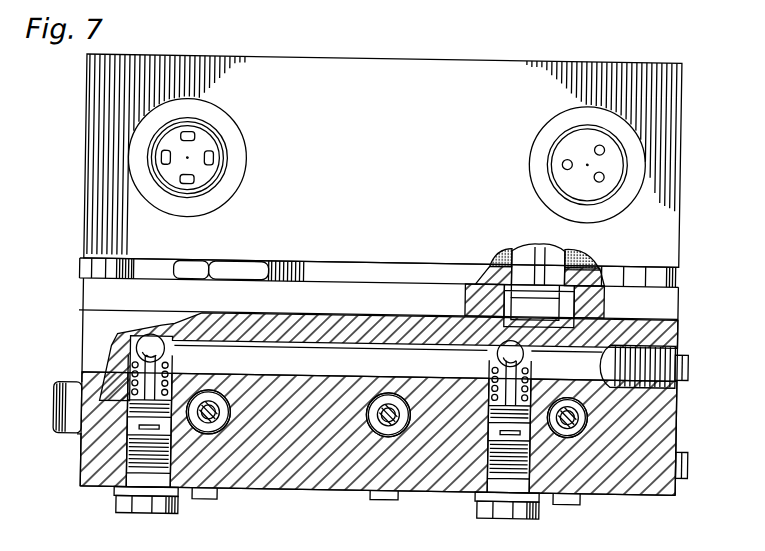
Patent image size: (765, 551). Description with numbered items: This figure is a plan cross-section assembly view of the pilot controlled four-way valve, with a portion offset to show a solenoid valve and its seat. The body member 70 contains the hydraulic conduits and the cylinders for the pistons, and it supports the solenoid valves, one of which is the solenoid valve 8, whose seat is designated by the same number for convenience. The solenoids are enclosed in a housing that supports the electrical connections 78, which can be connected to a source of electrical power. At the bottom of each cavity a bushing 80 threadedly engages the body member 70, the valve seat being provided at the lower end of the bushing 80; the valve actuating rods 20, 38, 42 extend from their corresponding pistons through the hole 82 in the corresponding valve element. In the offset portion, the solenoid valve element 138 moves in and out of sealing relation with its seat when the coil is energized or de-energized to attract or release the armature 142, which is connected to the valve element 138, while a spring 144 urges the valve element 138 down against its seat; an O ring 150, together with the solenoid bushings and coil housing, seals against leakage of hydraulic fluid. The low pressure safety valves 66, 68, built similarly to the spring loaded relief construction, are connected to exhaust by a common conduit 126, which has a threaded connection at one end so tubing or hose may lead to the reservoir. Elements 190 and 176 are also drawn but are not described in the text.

The electrical connections 78 is at (207, 158).
The armature 142 is at (528, 245).
The packing 190 is at (481, 245).
The spring 144 is at (518, 263).
The packing 176 is at (605, 250).
The O ring 150 is at (513, 300).
The valve element 138 is at (568, 307).
The low pressure safety valve 66 is at (100, 346).
The low pressure safety valve 68 is at (532, 355).
The solenoid valve 8 is at (632, 367).
The common conduit 126 is at (388, 360).
The bushing 80 is at (405, 413).
The valve actuating rod 42 is at (235, 415).
The valve actuating rod 38 is at (410, 415).
The hole 82 is at (412, 426).
The valve actuating rod 20 is at (590, 411).
The body member 70 is at (605, 358).